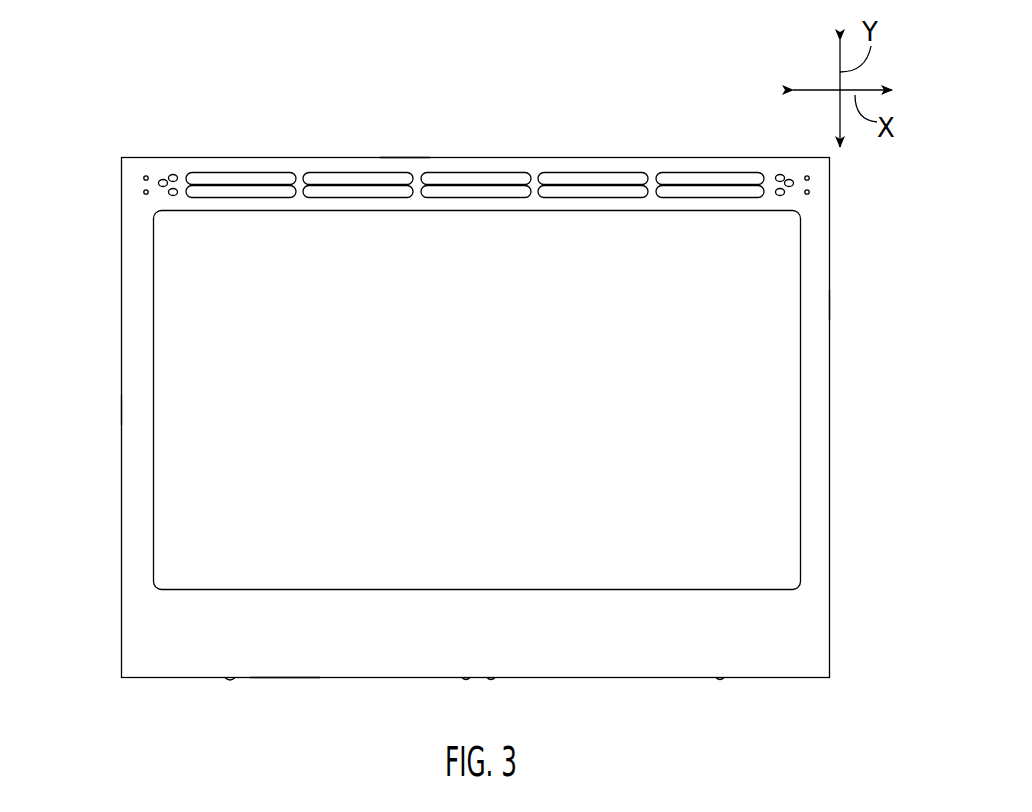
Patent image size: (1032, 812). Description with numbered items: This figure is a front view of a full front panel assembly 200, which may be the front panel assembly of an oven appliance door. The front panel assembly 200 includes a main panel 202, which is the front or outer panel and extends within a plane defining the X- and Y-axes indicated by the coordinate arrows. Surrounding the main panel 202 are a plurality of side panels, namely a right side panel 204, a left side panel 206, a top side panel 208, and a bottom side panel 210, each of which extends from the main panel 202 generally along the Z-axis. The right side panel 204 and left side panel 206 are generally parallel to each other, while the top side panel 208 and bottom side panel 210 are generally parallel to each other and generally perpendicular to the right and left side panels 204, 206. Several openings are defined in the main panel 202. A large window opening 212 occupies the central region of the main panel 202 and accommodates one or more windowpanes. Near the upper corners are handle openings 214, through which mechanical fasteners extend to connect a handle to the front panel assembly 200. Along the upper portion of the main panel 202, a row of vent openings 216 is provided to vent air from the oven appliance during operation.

The front panel assembly 200 is at (107, 80).
The main panel 202 is at (808, 623).
The right side panel 204 is at (833, 305).
The left side panel 206 is at (120, 410).
The top side panel 208 is at (403, 153).
The bottom side panel 210 is at (282, 680).
The window opening 212 is at (568, 411).
The handle openings 214 is at (168, 167).
The vent openings 216 is at (247, 185).